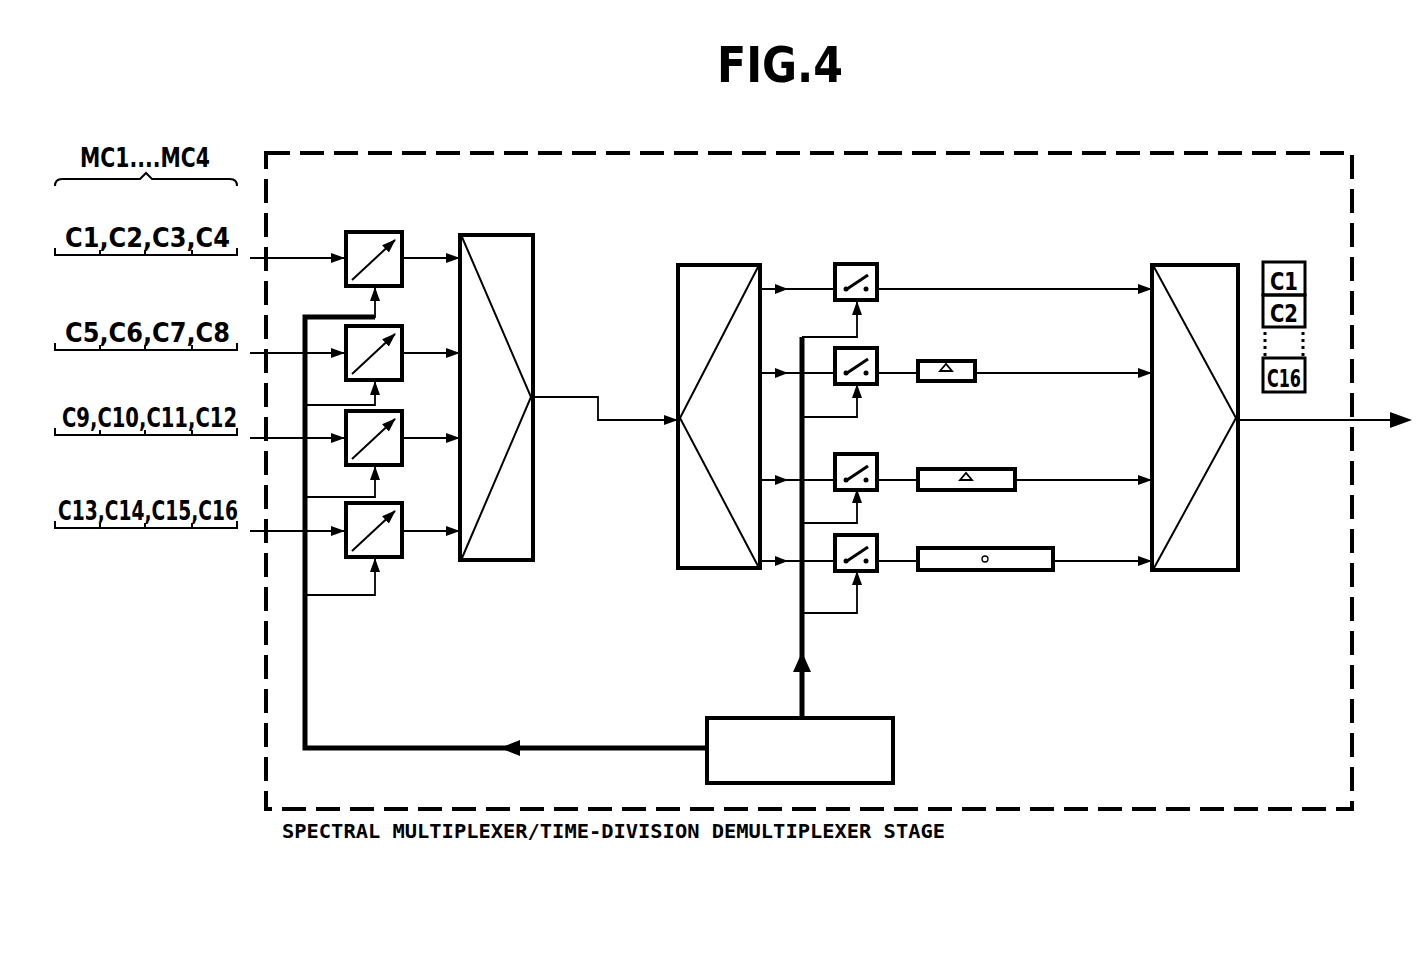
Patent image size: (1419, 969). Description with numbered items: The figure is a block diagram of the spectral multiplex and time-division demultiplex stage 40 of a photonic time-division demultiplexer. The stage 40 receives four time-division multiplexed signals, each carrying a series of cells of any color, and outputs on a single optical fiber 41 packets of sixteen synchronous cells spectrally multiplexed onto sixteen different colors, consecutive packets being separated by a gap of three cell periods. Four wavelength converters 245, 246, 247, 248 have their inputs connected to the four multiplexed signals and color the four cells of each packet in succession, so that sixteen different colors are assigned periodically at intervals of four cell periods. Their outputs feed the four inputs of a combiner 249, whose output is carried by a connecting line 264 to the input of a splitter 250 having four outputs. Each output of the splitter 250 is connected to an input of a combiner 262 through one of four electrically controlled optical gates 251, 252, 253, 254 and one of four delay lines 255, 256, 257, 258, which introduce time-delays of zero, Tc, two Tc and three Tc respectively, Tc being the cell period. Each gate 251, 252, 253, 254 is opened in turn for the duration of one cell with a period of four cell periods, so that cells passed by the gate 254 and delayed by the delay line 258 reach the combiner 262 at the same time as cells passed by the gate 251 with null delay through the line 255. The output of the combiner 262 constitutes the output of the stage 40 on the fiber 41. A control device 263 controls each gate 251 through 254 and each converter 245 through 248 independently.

The spectral multiplex and time-division demultiplex stage 40 is at (403, 152).
The optical fiber 41 is at (1372, 418).
The wavelength converter 245 is at (381, 232).
The wavelength converter 246 is at (392, 326).
The wavelength converter 247 is at (392, 411).
The wavelength converter 248 is at (392, 503).
The combiner 249 is at (504, 238).
The splitter 250 is at (708, 268).
The electrically controlled optical gate 251 is at (853, 264).
The electrically controlled optical gate 252 is at (862, 348).
The electrically controlled optical gate 253 is at (860, 454).
The electrically controlled optical gate 254 is at (860, 535).
The delay line 255 is at (948, 291).
The delay line 256 is at (955, 381).
The delay line 257 is at (992, 483).
The delay line 258 is at (1005, 571).
The combiner 262 is at (1182, 268).
The control device 263 is at (884, 748).
The connecting line 264 is at (566, 394).